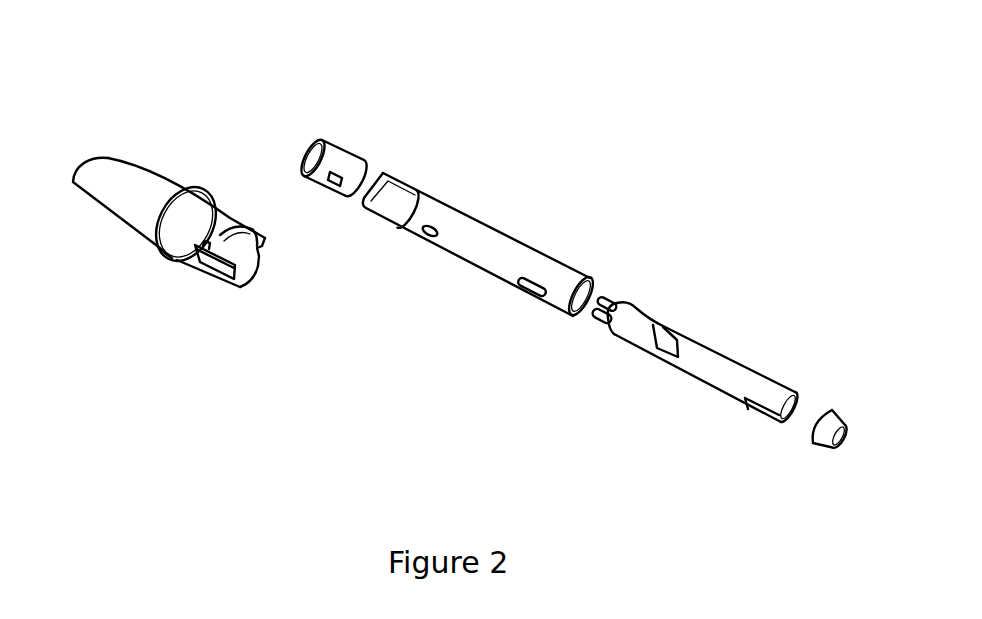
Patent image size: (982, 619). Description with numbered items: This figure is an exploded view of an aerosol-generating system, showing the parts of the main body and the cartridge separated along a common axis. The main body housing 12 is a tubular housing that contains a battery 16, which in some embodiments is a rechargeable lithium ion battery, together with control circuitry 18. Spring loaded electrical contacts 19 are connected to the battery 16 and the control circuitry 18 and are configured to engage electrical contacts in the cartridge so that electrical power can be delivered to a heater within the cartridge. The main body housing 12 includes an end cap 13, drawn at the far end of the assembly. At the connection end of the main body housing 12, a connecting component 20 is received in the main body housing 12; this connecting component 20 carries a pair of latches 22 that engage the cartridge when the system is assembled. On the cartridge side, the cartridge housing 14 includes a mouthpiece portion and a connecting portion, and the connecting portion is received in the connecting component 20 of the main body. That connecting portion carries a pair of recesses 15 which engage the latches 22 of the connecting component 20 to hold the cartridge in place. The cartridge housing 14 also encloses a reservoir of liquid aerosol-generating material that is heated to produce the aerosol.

The main body housing 12 is at (483, 238).
The end cap 13 is at (822, 442).
The cartridge housing 14 is at (139, 184).
The recesses 15 is at (238, 227).
The battery 16 is at (733, 372).
The control circuitry 18 is at (640, 317).
The spring loaded electrical contacts 19 is at (610, 303).
The connecting component 20 is at (342, 150).
The latches 22 is at (333, 183).